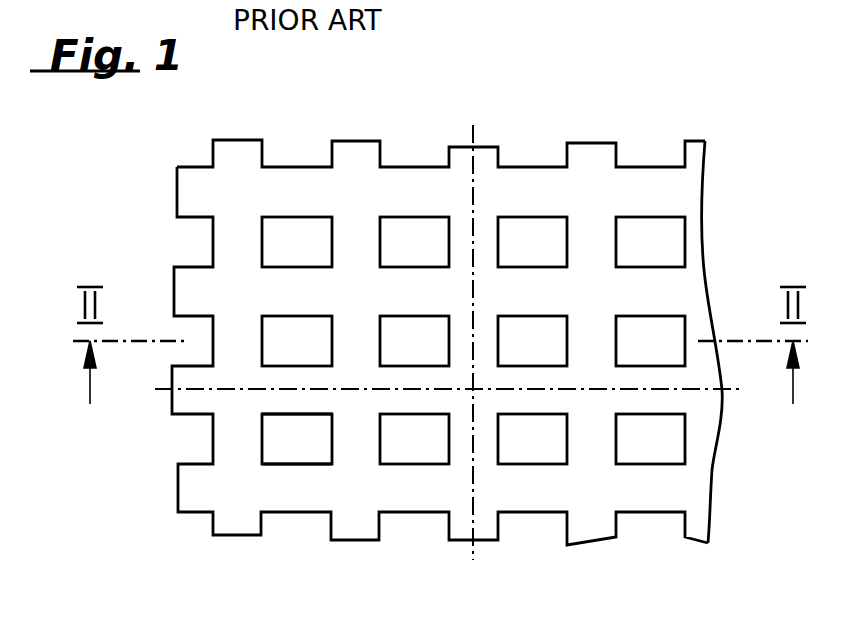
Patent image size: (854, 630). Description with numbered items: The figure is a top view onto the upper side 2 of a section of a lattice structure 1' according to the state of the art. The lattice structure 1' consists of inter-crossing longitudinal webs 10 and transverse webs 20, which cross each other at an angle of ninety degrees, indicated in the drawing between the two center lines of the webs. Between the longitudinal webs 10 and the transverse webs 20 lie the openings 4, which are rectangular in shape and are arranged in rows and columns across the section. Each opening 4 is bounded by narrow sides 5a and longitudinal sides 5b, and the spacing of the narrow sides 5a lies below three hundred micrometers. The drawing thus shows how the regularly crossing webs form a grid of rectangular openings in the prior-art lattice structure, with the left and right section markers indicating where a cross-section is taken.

The lattice structure 1' is at (440, 301).
The upper side 2 is at (196, 187).
The openings 4 is at (318, 452).
The narrow sides 5a is at (264, 432).
The longitudinal sides 5b is at (290, 463).
The longitudinal webs 10 is at (243, 152).
The transverse webs 20 is at (667, 193).